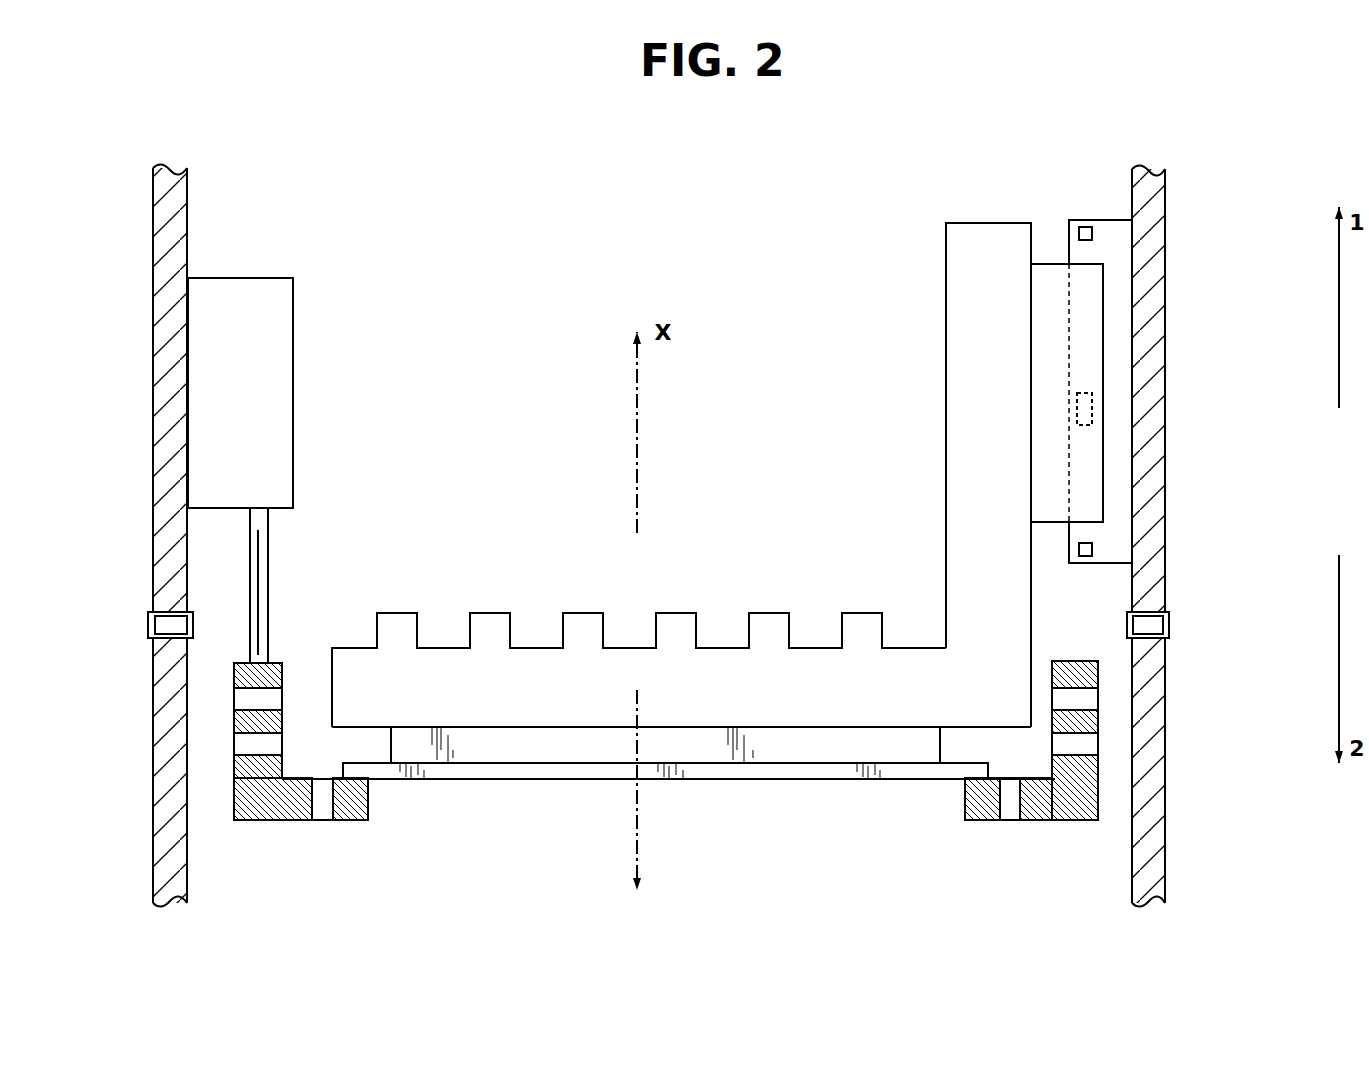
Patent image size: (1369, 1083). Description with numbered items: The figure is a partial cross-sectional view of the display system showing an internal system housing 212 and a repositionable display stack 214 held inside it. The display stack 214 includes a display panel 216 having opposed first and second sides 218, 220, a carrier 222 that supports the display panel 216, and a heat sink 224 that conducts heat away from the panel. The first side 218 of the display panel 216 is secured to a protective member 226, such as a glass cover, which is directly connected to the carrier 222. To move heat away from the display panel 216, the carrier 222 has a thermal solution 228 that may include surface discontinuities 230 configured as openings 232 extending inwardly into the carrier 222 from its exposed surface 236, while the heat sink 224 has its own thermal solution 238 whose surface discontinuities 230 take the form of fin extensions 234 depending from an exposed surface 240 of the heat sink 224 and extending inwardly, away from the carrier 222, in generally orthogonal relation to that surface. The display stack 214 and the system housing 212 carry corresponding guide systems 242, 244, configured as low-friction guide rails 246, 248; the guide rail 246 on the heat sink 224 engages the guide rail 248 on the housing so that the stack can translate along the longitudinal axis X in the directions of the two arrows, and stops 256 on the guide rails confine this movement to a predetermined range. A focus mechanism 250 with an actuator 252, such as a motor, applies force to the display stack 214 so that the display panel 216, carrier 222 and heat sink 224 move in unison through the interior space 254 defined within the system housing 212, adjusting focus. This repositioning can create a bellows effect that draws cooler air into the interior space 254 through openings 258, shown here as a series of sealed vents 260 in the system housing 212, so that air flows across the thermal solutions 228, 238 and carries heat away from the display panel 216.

The internal system housing 212 is at (1170, 182).
The repositionable display stack 214 is at (903, 790).
The display panel 216 is at (547, 748).
The first side 218 is at (813, 765).
The second side 220 is at (807, 727).
The carrier 222 is at (295, 828).
The heat sink 224 is at (435, 640).
The protective member 226 is at (723, 775).
The thermal solution 228 is at (995, 823).
The surface discontinuities 230 is at (487, 632).
The openings 232 is at (277, 695).
The extensions 234 is at (683, 614).
The exposed surface 236 is at (234, 720).
The thermal solution 238 is at (514, 607).
The exposed surface 240 is at (357, 648).
The guide system 242 is at (1049, 252).
The guide system 244 is at (1107, 212).
The guide rail 246 is at (1040, 358).
The guide rail 248 is at (1118, 247).
The focus mechanism 250 is at (296, 296).
The actuator 252 is at (250, 394).
The interior space 254 is at (752, 328).
The stops 256 is at (1086, 227).
The openings 258 is at (145, 630).
The sealed vents 260 is at (153, 613).